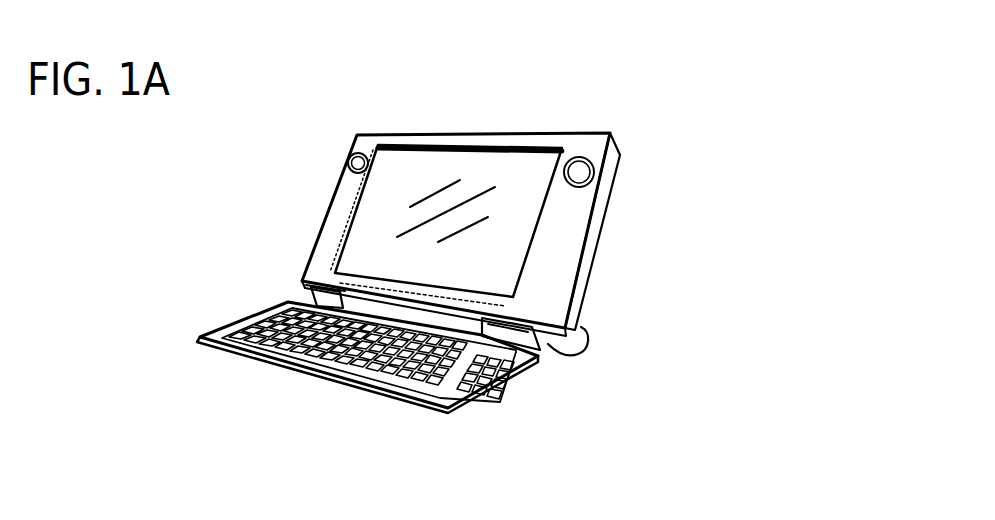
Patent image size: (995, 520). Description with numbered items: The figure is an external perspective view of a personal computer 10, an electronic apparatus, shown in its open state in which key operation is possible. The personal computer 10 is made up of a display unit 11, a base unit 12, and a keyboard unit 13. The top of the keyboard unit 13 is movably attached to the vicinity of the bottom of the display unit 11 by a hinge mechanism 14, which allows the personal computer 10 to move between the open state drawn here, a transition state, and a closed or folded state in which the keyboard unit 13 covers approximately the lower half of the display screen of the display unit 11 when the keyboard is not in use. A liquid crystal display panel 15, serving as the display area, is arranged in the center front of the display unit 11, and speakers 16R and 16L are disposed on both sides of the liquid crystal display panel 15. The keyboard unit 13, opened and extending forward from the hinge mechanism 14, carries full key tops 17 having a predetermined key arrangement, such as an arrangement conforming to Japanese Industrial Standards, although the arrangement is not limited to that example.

The personal computer 10 is at (508, 126).
The display unit 11 is at (585, 263).
The base unit 12 is at (580, 322).
The keyboard unit 13 is at (495, 395).
The hinge mechanism 14 is at (553, 355).
The liquid crystal display panel 15 is at (416, 180).
The speaker 16L is at (350, 156).
The speaker 16R is at (590, 172).
The full key tops 17 is at (279, 329).